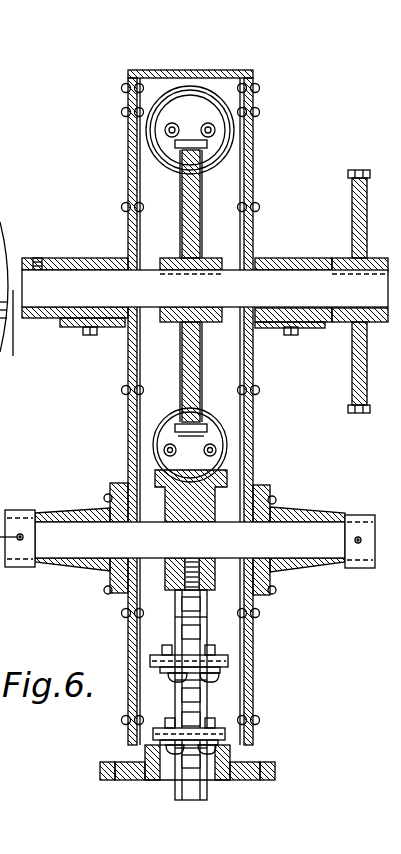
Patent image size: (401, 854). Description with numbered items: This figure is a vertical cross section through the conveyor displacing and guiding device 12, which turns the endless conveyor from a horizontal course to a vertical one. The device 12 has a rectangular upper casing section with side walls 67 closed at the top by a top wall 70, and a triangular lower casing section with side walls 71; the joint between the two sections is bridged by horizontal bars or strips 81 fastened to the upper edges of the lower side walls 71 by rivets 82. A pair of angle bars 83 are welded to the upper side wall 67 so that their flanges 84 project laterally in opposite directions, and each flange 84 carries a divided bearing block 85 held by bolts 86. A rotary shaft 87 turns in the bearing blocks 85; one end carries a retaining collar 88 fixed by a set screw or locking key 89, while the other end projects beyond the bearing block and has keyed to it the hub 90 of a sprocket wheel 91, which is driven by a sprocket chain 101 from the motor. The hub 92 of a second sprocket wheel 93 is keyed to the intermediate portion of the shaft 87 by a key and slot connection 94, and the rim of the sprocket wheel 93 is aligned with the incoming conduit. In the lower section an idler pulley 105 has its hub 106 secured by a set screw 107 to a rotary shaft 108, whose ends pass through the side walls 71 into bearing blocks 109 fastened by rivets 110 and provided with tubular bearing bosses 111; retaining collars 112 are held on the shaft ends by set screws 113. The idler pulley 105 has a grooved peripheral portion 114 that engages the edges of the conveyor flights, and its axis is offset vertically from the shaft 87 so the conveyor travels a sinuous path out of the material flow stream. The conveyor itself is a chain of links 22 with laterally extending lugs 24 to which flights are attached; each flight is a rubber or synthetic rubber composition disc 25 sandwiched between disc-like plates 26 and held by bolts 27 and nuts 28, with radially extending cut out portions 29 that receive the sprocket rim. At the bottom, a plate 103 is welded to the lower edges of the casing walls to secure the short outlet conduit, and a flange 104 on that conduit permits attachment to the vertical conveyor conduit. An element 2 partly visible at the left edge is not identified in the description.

The drive unit 2 is at (18, 512).
The conveyor displacing and guiding device 12 is at (263, 129).
The chain link 22 is at (175, 143).
The laterally extending lug 24 is at (221, 671).
The rubber or synthetic rubber composition flight 25 is at (160, 130).
The disc-like plates 26 is at (167, 652).
The bolts 27 is at (219, 680).
The nuts 28 is at (216, 652).
The radially extending cut out portions 29 is at (208, 437).
The side walls 67 is at (130, 172).
The top wall 70 is at (198, 70).
The side walls 71 is at (136, 650).
The horizontal bars or strips 81 is at (141, 366).
The rivets 82 is at (124, 393).
The angle bars 83 is at (128, 352).
The flanges 84 is at (85, 333).
The divided bearing block 85 is at (62, 258).
The bolts 86 is at (92, 335).
The rotary shaft 87 is at (92, 287).
The retaining collar 88 is at (27, 258).
The set screw or locking key 89 is at (39, 258).
The hub 90 is at (338, 258).
The sprocket wheel 91 is at (352, 215).
The hub 92 is at (210, 258).
The sprocket wheel 93 is at (185, 228).
The key and slot connection 94 is at (185, 278).
The sprocket chain 101 is at (352, 172).
The plate 103 is at (230, 745).
The flange 104 is at (276, 770).
The idler pulley 105 is at (225, 487).
The hub 106 is at (140, 592).
The set screw 107 is at (192, 560).
The rotary shaft 108 is at (300, 535).
The bearing blocks 109 is at (122, 484).
The rivets 110 is at (104, 498).
The tubular bearing bosses 111 is at (66, 568).
The retaining collars 112 is at (355, 568).
The set screws 113 is at (360, 545).
The grooved peripheral portion 114 is at (166, 613).